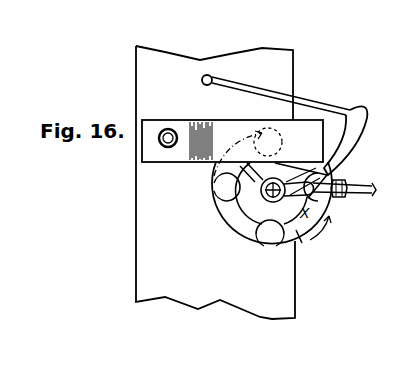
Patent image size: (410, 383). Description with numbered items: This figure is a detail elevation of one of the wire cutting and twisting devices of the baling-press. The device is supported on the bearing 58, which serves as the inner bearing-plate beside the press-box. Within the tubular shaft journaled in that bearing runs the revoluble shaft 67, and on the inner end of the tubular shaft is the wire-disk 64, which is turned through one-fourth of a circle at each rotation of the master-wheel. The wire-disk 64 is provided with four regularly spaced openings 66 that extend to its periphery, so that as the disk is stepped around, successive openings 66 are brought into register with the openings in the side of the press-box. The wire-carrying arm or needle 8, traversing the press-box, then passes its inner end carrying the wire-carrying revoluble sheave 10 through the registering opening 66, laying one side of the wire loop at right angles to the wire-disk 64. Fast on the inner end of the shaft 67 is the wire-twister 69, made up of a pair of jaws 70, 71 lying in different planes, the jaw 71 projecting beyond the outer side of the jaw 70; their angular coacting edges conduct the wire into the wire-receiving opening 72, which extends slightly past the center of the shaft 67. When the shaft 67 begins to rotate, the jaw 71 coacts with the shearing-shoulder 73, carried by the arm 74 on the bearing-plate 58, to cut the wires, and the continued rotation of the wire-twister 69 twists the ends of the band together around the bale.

The bearing 58 is at (250, 53).
The wire-disk 64 is at (215, 206).
The opening 66 is at (224, 187).
The revoluble shaft 67 is at (261, 194).
The wire-twister 69 is at (322, 173).
The jaw 70 is at (298, 153).
The jaw 71 is at (298, 241).
The wire-receiving opening 72 is at (276, 228).
The shearing-shoulder 73 is at (262, 160).
The arm 74 is at (320, 137).
The wire-carrying revoluble sheave 10 is at (364, 187).
The wire-carrying arm or needle 8 is at (343, 194).